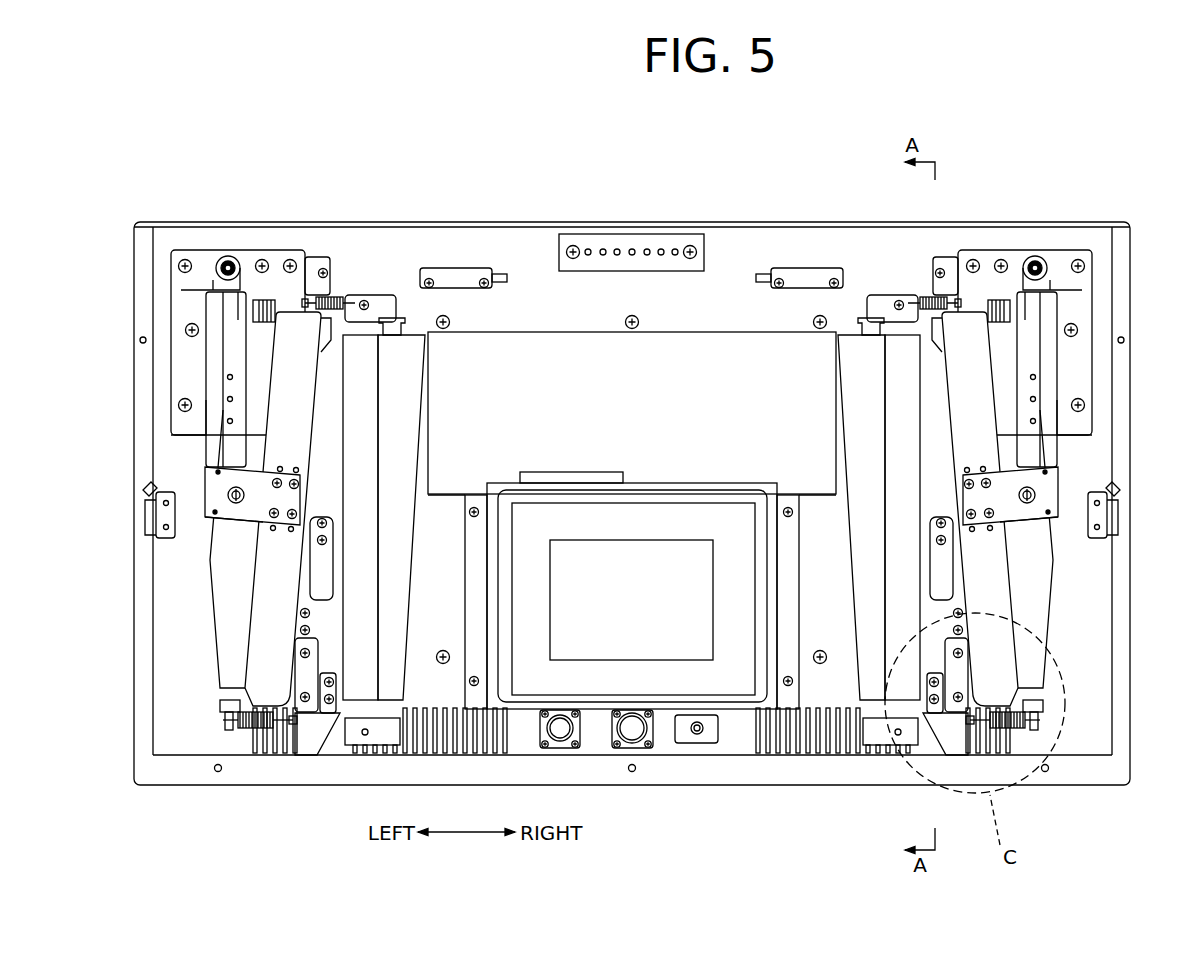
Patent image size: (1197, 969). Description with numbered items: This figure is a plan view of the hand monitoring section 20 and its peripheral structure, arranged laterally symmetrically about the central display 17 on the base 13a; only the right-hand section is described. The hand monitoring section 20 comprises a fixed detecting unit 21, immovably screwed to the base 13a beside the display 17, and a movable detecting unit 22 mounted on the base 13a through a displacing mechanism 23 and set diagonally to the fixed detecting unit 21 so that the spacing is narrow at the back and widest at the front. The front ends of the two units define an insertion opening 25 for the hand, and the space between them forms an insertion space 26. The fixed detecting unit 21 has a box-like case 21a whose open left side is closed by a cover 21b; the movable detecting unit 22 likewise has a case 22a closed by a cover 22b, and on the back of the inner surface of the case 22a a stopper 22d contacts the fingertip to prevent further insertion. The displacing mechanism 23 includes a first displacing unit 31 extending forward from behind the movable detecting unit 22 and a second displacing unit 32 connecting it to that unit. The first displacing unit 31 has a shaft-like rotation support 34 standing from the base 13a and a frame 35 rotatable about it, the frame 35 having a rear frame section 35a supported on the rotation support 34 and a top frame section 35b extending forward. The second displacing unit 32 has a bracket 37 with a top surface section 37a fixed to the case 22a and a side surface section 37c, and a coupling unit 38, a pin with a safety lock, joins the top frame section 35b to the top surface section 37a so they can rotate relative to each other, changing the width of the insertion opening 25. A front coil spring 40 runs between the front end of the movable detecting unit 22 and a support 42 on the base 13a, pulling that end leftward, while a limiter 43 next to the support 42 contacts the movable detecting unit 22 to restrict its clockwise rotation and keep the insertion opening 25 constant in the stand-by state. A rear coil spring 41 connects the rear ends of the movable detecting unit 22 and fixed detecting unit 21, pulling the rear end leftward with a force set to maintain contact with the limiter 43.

The base 13a is at (770, 248).
The display 17 is at (655, 518).
The hand monitoring section 20 is at (1142, 180).
The fixed detecting unit 21 is at (833, 531).
The case 21a is at (890, 400).
The cover 21b is at (850, 455).
The movable detecting unit 22 is at (1065, 503).
The case 22a is at (990, 578).
The cover 22b is at (1040, 620).
The stopper 22d is at (933, 337).
The displacing mechanism 23 is at (968, 488).
The insertion opening 25 is at (935, 720).
The insertion space 26 is at (950, 500).
The first displacing unit 31 is at (1063, 272).
The second displacing unit 32 is at (1085, 440).
The rotation support 34 is at (1035, 256).
The frame 35 is at (1078, 329).
The rear frame section 35a is at (1025, 293).
The top frame section 35b is at (1036, 370).
The bracket 37 is at (1068, 492).
The top surface section 37a is at (1025, 515).
The side surface section 37c is at (1095, 490).
The coupling unit 38 is at (1023, 490).
The front coil spring 40 is at (1022, 742).
The rear coil spring 41 is at (925, 295).
The support 42 is at (966, 745).
The limiter 43 is at (958, 676).